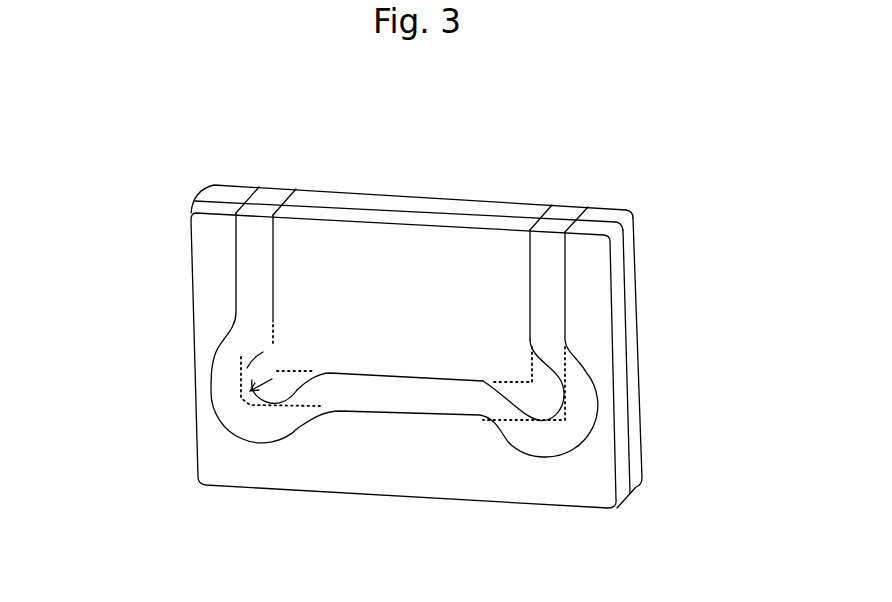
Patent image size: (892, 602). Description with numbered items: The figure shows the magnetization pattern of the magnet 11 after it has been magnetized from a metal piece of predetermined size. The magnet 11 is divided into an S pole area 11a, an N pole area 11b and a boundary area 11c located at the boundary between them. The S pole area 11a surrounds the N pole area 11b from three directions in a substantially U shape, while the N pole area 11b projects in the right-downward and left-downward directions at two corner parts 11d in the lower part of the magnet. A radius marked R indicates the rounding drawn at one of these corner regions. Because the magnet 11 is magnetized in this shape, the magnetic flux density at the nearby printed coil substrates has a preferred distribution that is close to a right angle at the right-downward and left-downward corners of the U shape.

The magnet 11 is at (390, 163).
The S pole area 11a is at (598, 303).
The N pole area 11b is at (465, 240).
The boundary area 11c is at (247, 232).
The corner parts 11d is at (560, 383).
The corner radius R is at (243, 373).